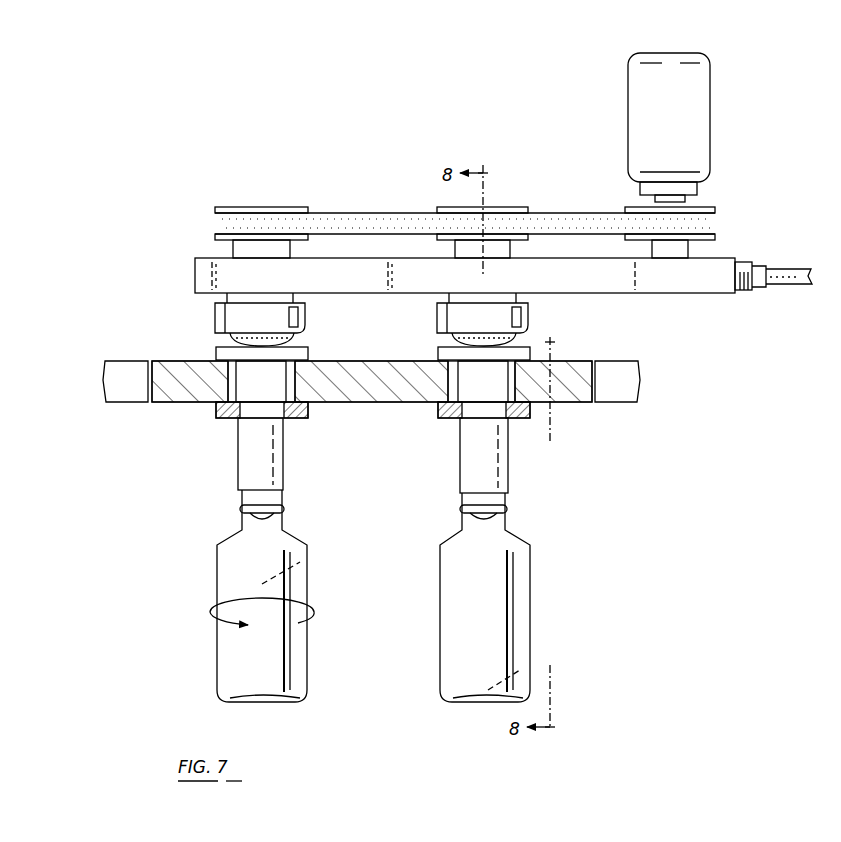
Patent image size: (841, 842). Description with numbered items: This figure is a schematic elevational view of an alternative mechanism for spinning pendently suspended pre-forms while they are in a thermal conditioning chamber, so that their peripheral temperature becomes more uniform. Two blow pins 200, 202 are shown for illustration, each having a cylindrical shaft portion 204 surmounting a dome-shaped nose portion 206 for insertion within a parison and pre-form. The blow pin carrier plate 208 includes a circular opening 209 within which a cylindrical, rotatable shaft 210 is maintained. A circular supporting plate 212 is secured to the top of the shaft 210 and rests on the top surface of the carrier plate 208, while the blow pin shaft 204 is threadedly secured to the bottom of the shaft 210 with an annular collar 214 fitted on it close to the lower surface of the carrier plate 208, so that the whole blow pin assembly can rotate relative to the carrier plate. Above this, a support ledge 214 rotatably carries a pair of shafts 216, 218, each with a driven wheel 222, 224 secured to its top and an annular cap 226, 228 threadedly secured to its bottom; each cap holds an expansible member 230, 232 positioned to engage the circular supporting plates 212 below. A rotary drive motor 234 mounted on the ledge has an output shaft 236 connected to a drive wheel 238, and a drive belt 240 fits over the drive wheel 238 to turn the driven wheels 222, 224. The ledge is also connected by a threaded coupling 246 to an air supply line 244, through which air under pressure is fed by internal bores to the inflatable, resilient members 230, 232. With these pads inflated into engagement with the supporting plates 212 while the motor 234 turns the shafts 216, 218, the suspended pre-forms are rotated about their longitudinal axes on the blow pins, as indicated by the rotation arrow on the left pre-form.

The blow pin 200 is at (528, 446).
The blow pin 202 is at (226, 448).
The cylindrical shaft portion 204 is at (470, 474).
The dome-shaped nose portion 206 is at (493, 518).
The blow pin carrier plate 208 is at (577, 400).
The circular opening 209 is at (452, 387).
The rotatable shaft 210 is at (492, 391).
The circular supporting plate 212 is at (442, 346).
The annular collar / support ledge 214 is at (673, 287).
The rotatable shaft 216 is at (506, 256).
The rotatable shaft 218 is at (233, 256).
The driven wheel 222 is at (517, 207).
The driven wheel 224 is at (297, 207).
The annular cap 226 is at (447, 315).
The annular cap 228 is at (224, 311).
The expansible member 230 is at (517, 340).
The expansible member 232 is at (232, 339).
The rotary drive motor 234 is at (683, 121).
The output shaft 236 is at (688, 196).
The drive wheel 238 is at (716, 211).
The drive belt 240 is at (716, 236).
The air supply line 244 is at (788, 279).
The threaded coupling 246 is at (742, 290).